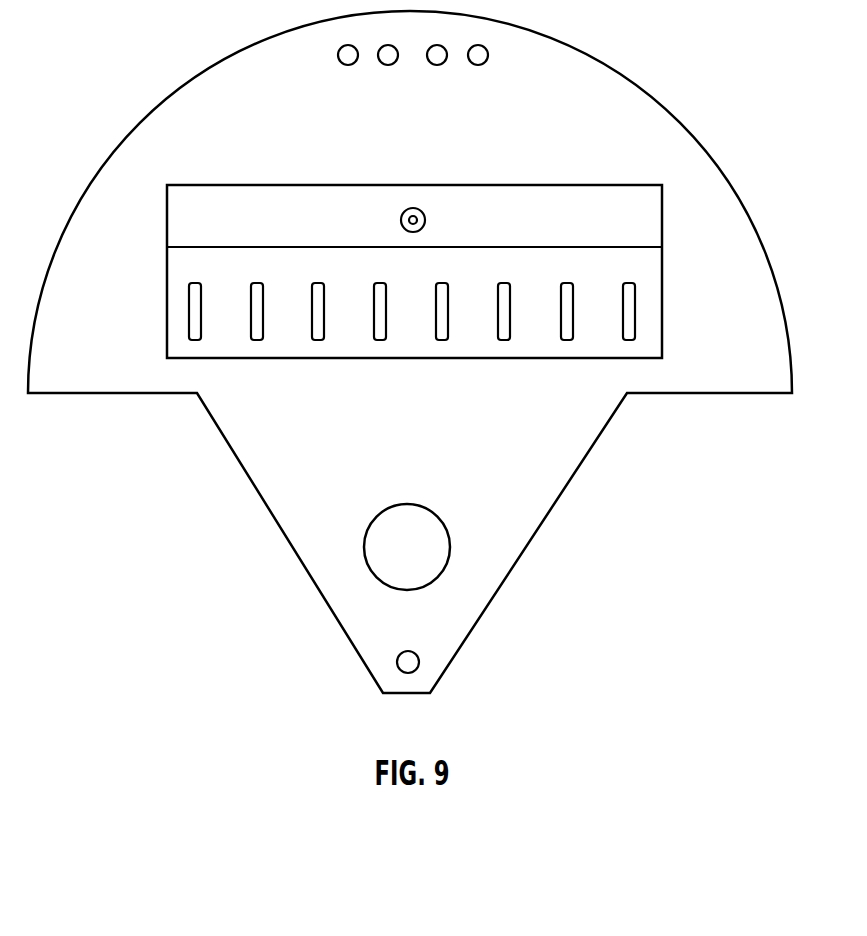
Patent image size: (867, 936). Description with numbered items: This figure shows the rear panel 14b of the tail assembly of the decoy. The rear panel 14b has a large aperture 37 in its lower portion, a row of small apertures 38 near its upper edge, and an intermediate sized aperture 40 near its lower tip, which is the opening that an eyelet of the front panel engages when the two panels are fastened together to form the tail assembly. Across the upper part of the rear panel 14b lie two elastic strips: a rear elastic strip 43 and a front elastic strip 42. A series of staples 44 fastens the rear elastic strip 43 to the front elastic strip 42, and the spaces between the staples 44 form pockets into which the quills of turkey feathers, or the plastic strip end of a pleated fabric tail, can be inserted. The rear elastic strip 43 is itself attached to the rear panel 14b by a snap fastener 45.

The rear panel 14b is at (379, 427).
The large aperture 37 is at (398, 510).
The small apertures 38 is at (474, 64).
The intermediate sized aperture 40 is at (419, 662).
The front elastic strip 42 is at (640, 265).
The rear elastic strip 43 is at (555, 212).
The staples 44 is at (500, 283).
The snap fastener 45 is at (426, 220).